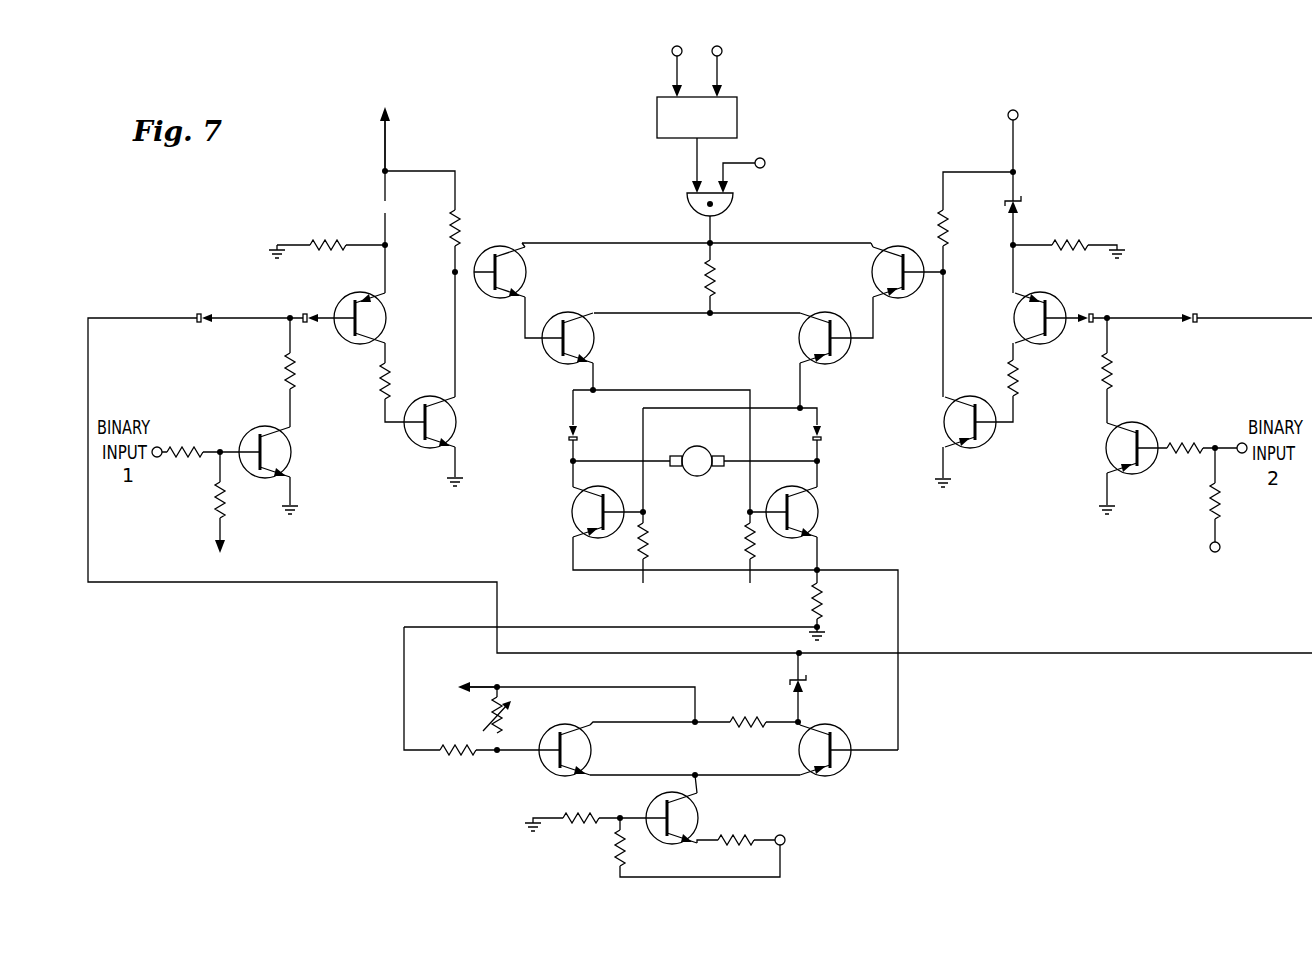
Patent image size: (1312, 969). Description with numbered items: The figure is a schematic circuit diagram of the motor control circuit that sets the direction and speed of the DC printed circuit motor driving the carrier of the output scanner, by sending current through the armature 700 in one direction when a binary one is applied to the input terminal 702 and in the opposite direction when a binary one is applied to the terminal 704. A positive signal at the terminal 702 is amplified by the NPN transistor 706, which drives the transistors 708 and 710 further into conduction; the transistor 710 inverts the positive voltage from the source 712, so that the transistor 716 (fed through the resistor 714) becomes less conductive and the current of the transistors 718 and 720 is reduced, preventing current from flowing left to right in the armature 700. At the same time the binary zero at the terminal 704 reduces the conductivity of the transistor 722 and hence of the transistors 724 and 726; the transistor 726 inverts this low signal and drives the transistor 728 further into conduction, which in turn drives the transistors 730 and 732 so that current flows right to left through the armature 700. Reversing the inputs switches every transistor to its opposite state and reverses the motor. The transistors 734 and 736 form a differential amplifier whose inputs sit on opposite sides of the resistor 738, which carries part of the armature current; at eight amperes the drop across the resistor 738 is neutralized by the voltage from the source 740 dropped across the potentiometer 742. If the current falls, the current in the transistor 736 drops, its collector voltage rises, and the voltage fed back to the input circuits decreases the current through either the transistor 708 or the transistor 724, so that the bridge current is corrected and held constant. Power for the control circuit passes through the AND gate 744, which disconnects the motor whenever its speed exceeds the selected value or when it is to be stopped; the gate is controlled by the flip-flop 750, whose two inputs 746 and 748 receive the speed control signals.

The armature 700 is at (697, 477).
The input terminal 702 is at (161, 446).
The input terminal 704 is at (1238, 443).
The NPN transistor 706 is at (293, 453).
The transistor 708 is at (388, 319).
The transistor 710 is at (458, 427).
The source 712 is at (380, 113).
The resistor 714 is at (462, 229).
The transistor 716 is at (528, 275).
The transistor 718 is at (597, 343).
The transistor 720 is at (820, 512).
The transistor 722 is at (1107, 448).
The transistor 724 is at (1015, 320).
The transistor 726 is at (945, 423).
The transistor 728 is at (872, 272).
The transistor 730 is at (802, 342).
The transistor 732 is at (572, 512).
The transistor 734 is at (592, 750).
The transistor 736 is at (806, 748).
The resistor 738 is at (825, 602).
The source 740 is at (463, 684).
The potentiometer 742 is at (487, 716).
The AND gate 744 is at (688, 200).
The input 746 is at (722, 51).
The input 748 is at (672, 51).
The flip-flop 750 is at (740, 118).